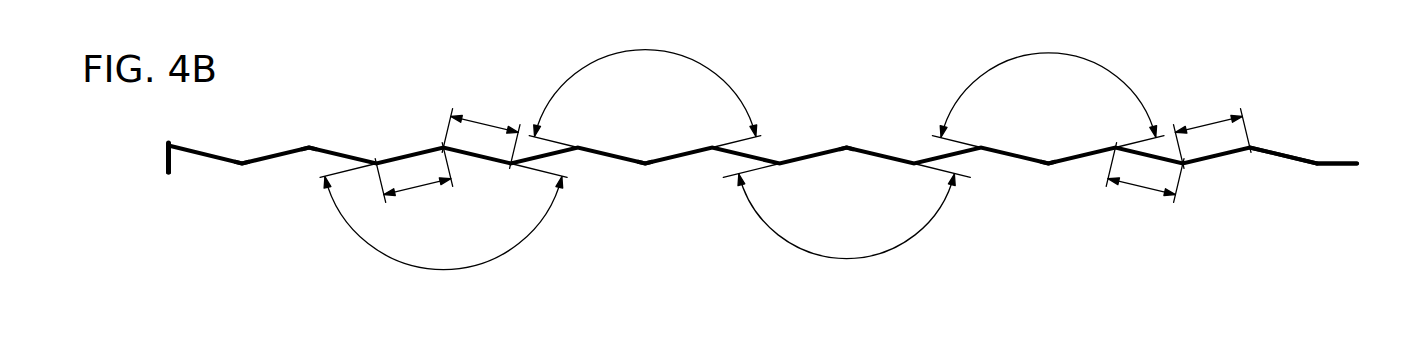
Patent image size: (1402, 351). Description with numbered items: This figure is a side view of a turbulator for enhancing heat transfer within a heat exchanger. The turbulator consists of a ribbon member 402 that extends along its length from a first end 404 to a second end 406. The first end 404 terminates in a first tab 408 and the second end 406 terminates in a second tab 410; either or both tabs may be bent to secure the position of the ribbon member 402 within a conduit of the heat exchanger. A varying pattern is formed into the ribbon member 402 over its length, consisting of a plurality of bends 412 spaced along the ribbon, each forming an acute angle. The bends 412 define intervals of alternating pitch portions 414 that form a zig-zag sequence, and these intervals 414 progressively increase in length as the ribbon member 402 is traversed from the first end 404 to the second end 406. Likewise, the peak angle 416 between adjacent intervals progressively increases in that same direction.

The ribbon member 402 is at (192, 148).
The first end 404 is at (156, 164).
The second end 406 is at (1329, 152).
The first tab 408 is at (172, 158).
The second tab 410 is at (1336, 166).
The bends 412 is at (308, 145).
The alternating pitch portions 414 is at (485, 118).
The peak angle 416 is at (590, 64).